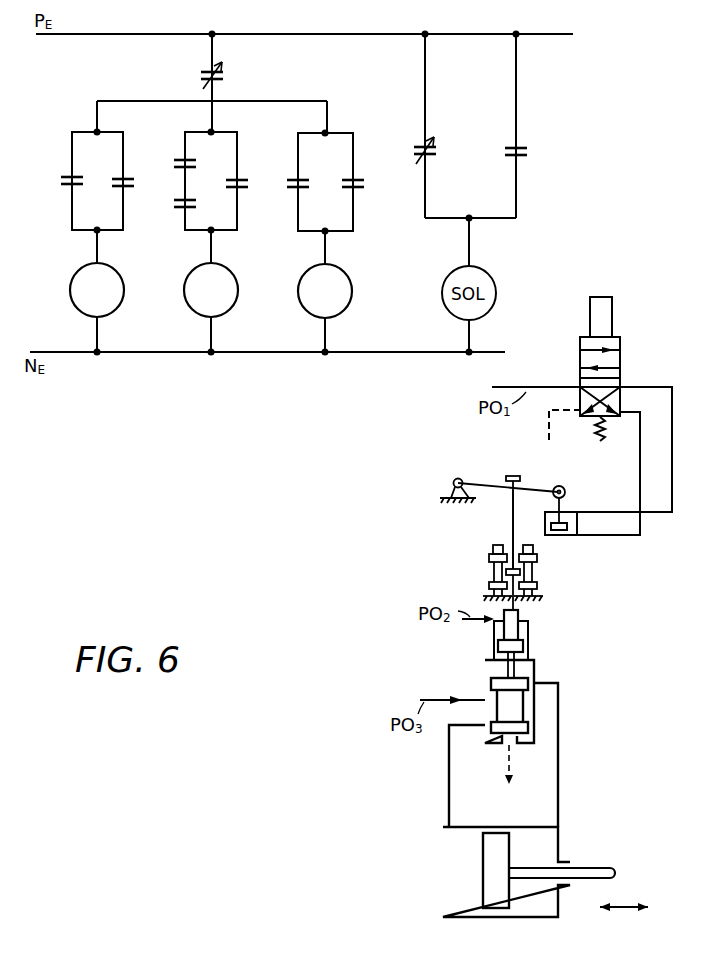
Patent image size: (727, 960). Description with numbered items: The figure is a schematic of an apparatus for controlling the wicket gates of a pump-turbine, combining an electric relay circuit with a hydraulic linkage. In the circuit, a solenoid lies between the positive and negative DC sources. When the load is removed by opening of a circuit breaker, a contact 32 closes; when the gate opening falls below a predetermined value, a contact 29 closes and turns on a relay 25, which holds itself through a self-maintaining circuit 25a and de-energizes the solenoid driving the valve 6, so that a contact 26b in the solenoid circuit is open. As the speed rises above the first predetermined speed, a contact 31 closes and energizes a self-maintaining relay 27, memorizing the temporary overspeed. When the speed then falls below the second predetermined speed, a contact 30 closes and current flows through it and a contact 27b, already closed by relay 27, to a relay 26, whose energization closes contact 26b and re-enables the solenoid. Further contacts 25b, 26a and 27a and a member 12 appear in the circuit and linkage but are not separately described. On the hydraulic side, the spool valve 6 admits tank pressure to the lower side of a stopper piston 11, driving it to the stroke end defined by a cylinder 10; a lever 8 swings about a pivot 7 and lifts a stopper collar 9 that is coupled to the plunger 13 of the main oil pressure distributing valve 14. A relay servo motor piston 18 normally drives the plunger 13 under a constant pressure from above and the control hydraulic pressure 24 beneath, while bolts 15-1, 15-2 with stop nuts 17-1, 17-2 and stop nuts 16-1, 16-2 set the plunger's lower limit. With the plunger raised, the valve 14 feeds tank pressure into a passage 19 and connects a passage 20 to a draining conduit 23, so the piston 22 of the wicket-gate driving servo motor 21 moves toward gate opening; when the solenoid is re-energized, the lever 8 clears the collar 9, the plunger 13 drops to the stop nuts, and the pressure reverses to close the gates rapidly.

The contact 32 is at (222, 60).
The contact 29 is at (69, 177).
The self-maintaining circuit 25a is at (126, 187).
The contact 30 is at (183, 160).
The contact 27b is at (183, 203).
The capacitor 26a is at (240, 188).
The contact 31 is at (296, 181).
The capacitor 27a is at (356, 188).
The variable capacitor 25b is at (428, 156).
The contact 26b is at (520, 157).
The relay 25 is at (124, 297).
The relay 26 is at (238, 297).
The relay 27 is at (352, 298).
The spool valve 6 is at (622, 358).
The pivot 7 is at (459, 478).
The lever 8 is at (490, 486).
The stopper collar 9 is at (513, 476).
The cylinder 10 is at (565, 536).
The stopper piston 11 is at (565, 492).
The rod 12 is at (512, 522).
The stop nut 17-2 is at (489, 558).
The bolt 15-2 is at (494, 572).
The stop nut 16-2 is at (489, 586).
The stop nut 17-1 is at (537, 558).
The bolt 15-1 is at (537, 572).
The stop nut 16-1 is at (537, 586).
The relay servo motor piston 18 is at (503, 632).
The control hydraulic pressure 24 is at (498, 648).
The plunger 13 is at (508, 668).
The main oil pressure distributing valve 14 is at (536, 668).
The draining conduit 23 is at (505, 752).
The passage 20 is at (449, 778).
The passage 19 is at (560, 770).
The wicket-gate driving servo motor 21 is at (416, 870).
The piston 22 is at (593, 868).